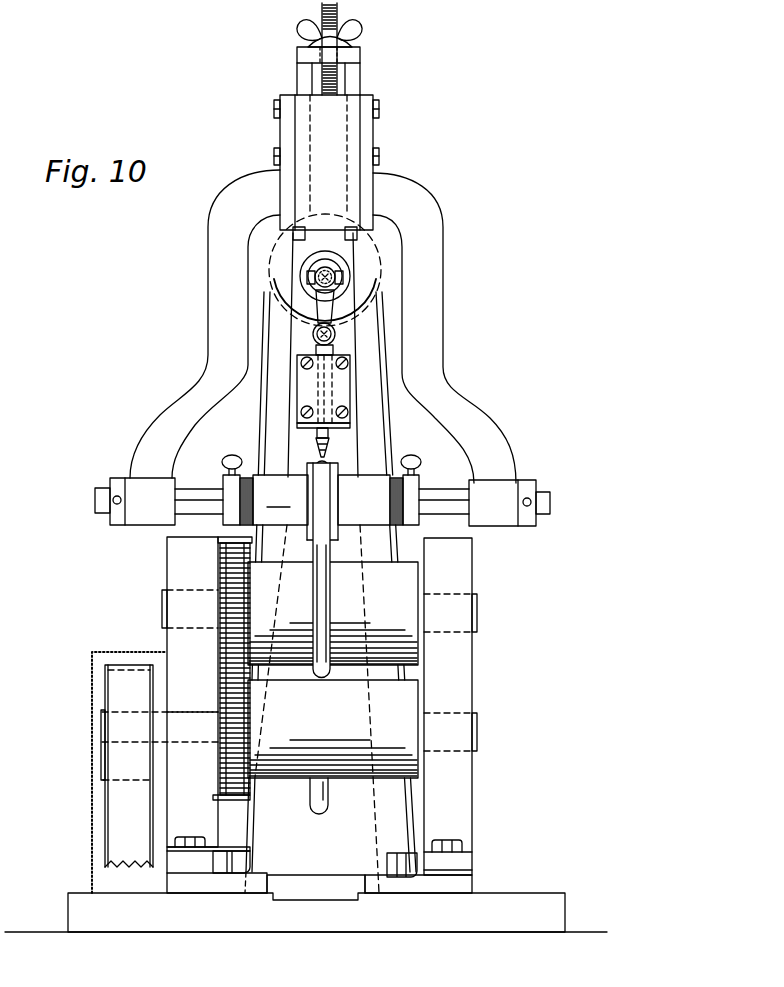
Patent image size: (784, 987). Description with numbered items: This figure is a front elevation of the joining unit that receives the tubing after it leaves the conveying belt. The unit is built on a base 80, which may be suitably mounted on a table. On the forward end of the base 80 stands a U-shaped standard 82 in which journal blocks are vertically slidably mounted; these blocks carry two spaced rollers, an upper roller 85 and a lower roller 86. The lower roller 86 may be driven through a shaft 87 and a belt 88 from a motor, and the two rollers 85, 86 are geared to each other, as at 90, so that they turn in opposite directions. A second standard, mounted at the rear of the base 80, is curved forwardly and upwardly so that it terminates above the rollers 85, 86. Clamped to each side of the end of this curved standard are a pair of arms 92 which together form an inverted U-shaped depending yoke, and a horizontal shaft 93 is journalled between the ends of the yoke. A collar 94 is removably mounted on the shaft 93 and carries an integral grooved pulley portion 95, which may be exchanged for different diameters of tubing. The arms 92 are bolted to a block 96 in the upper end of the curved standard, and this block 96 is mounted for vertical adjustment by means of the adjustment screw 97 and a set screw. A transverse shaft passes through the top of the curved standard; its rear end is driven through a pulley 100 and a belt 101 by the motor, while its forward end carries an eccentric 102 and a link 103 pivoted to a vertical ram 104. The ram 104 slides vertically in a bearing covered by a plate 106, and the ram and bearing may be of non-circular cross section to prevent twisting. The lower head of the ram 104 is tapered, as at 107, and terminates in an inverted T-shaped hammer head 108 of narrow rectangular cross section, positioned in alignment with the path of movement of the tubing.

The base 80 is at (82, 905).
The U-shaped standard 82 is at (173, 575).
The upper roller 85 is at (333, 613).
The lower roller 86 is at (333, 729).
The shaft 87 is at (102, 722).
The belt 88 is at (112, 817).
The gearing 90 is at (227, 667).
The arms 92 is at (217, 323).
The horizontal shaft 93 is at (197, 498).
The collar 94 is at (277, 487).
The grooved pulley portion 95 is at (338, 477).
The block 96 is at (335, 145).
The adjustment screw 97 is at (316, 42).
The pulley 100 is at (377, 285).
The belt 101 is at (343, 317).
The eccentric 102 is at (315, 260).
The link 103 is at (323, 303).
The vertical ram 104 is at (350, 424).
The plate 106 is at (318, 390).
The tapered portion 107 is at (316, 434).
The hammer head 108 is at (320, 452).